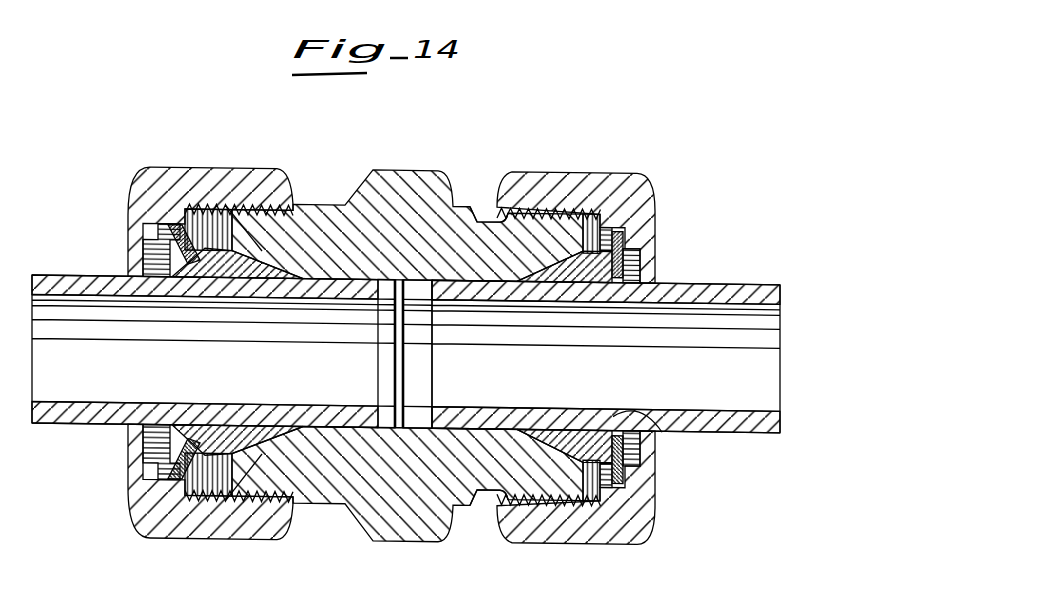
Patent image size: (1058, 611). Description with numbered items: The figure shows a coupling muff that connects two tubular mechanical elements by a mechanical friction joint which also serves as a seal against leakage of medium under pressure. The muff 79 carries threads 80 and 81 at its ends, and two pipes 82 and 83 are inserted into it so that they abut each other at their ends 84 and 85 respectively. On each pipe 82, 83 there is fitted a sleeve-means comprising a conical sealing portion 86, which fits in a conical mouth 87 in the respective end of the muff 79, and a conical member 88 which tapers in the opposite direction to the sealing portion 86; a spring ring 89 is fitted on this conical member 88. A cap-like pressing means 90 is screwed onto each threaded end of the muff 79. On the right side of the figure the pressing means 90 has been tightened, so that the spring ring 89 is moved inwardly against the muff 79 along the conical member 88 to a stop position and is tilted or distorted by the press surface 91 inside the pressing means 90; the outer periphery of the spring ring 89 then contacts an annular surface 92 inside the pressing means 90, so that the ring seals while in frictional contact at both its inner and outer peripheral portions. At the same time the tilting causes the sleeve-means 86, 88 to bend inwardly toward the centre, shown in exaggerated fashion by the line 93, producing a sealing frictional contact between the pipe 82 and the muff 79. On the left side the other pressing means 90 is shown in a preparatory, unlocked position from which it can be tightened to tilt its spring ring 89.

The muff 79 is at (344, 211).
The thread 80 is at (476, 211).
The thread 81 is at (297, 206).
The pipe 82 is at (748, 285).
The pipe 83 is at (56, 275).
The pipe end 84 is at (420, 288).
The pipe end 85 is at (381, 285).
The conical sealing portion 86 is at (232, 243).
The conical mouth 87 is at (286, 498).
The conical member 88 is at (165, 277).
The spring ring 89 is at (170, 243).
The cap-like pressing means 90 is at (197, 166).
The press surface 91 is at (628, 464).
The annular surface 92 is at (600, 480).
The line 93 is at (662, 424).